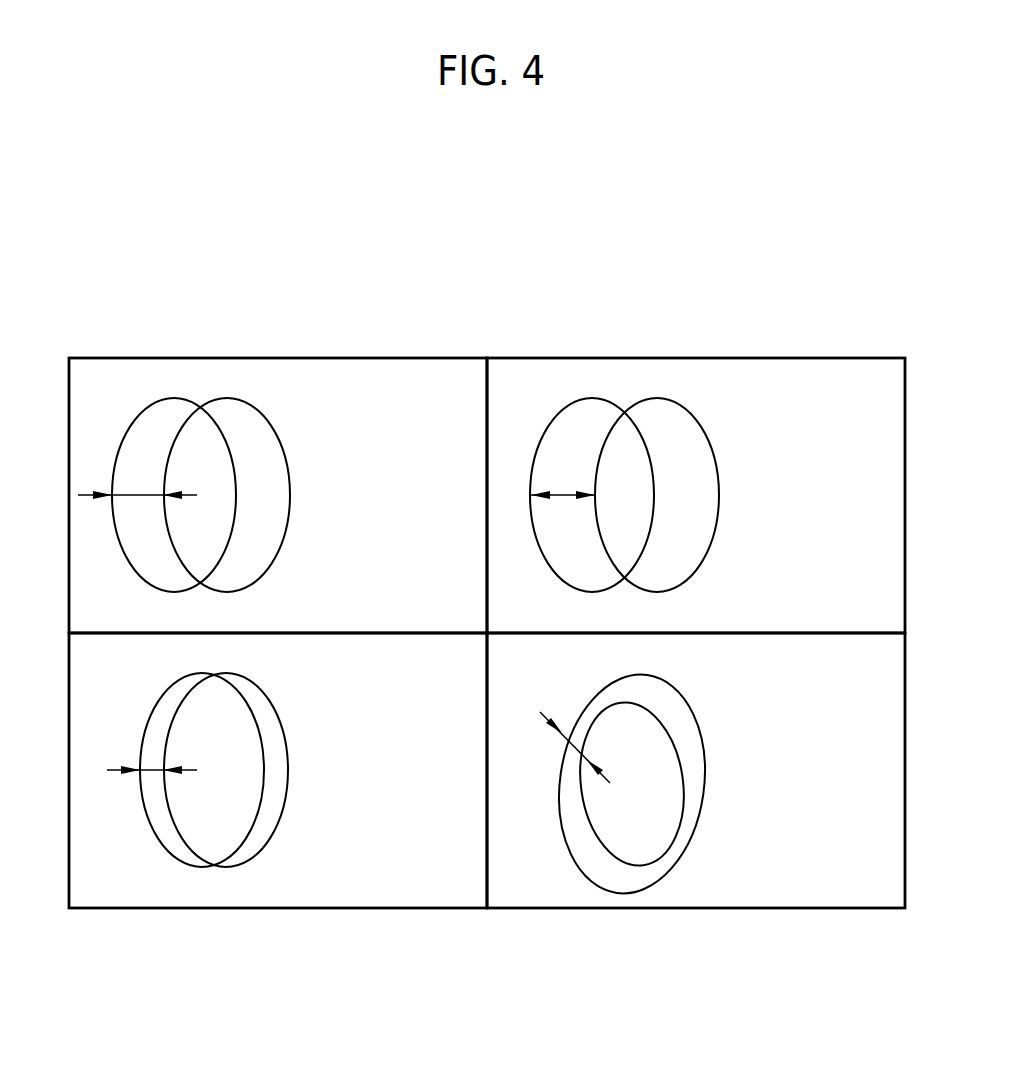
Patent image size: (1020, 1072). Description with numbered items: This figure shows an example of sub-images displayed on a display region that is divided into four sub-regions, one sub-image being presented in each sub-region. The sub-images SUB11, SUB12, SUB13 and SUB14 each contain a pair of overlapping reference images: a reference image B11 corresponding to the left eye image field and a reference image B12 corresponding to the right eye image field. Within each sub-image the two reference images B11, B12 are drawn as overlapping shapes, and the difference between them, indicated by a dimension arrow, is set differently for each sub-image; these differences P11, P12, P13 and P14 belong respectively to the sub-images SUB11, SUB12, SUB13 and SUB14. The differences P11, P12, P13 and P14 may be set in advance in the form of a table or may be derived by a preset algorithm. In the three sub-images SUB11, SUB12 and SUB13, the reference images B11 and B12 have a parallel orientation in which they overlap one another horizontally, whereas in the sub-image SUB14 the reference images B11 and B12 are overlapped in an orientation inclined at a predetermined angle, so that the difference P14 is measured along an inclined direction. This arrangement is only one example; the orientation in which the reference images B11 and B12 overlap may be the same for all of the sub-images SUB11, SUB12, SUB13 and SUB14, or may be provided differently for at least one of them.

The reference image B11 is at (253, 407).
The reference image B12 is at (143, 408).
The sub-image SUB11 is at (387, 388).
The sub-image SUB12 is at (806, 390).
The sub-image SUB13 is at (387, 875).
The sub-image SUB14 is at (803, 875).
The difference P11 is at (137, 482).
The difference P12 is at (563, 482).
The difference P13 is at (143, 757).
The difference P14 is at (595, 747).